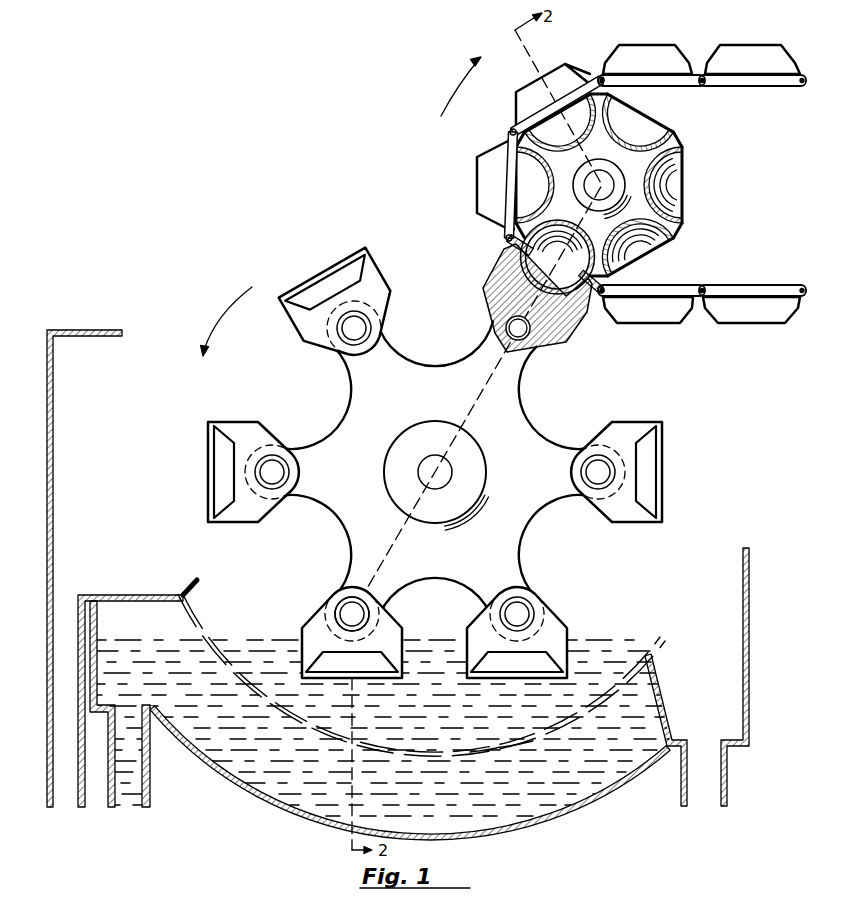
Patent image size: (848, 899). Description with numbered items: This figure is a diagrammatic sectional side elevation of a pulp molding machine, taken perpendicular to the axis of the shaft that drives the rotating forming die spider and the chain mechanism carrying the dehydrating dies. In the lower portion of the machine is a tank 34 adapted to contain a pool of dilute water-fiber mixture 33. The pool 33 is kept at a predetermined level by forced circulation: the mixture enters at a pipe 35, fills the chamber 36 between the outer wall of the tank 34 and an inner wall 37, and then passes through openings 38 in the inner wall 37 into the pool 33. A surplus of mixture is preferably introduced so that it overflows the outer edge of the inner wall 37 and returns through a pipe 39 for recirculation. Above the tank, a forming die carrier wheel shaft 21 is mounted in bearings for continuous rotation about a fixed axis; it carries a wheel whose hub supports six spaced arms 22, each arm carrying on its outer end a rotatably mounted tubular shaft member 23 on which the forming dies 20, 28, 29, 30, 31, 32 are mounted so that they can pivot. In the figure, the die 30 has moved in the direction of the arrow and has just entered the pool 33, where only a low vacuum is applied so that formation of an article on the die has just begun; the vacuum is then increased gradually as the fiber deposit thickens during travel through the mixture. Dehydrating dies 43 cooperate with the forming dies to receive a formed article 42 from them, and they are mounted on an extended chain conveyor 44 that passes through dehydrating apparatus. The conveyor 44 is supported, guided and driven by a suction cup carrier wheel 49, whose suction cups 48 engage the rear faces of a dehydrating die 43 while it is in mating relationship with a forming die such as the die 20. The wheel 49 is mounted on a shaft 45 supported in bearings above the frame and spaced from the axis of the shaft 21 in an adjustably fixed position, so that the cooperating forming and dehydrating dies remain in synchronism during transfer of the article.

The forming die 20 is at (567, 341).
The forming die carrier wheel shaft 21 is at (443, 466).
The spaced arms 22 is at (573, 496).
The tubular shaft member 23 is at (364, 603).
The forming die 28 is at (388, 290).
The forming die 29 is at (258, 423).
The forming die 30 is at (400, 629).
The forming die 31 is at (565, 633).
The forming die 32 is at (617, 425).
The pool of dilute water-fiber mixture 33 is at (290, 658).
The tank 34 is at (287, 811).
The pipe 35 is at (150, 799).
The chamber 36 is at (225, 736).
The inner wall 37 is at (510, 750).
The openings 38 is at (493, 758).
The pipe 39 is at (683, 797).
The formed article 42 is at (502, 259).
The dehydrating die 43 is at (580, 311).
The chain conveyor 44 is at (757, 272).
The shaft 45 is at (606, 172).
The suction cups 48 is at (683, 221).
The suction cup carrier wheel 49 is at (652, 158).